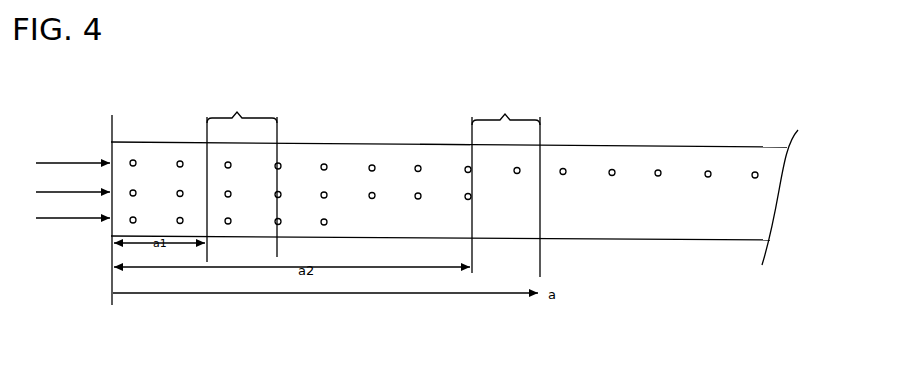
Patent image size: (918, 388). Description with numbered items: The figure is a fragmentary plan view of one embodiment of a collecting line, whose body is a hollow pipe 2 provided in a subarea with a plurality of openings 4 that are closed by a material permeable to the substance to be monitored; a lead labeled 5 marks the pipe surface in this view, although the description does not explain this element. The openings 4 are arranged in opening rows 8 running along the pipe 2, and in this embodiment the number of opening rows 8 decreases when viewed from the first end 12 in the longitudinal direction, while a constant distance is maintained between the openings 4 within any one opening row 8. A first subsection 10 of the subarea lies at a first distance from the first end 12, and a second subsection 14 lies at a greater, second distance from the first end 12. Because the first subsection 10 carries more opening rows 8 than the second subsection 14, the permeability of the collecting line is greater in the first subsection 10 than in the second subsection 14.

The hollow pipe 2 is at (715, 137).
The openings 4 is at (417, 164).
The upper edge 5 is at (443, 136).
The opening rows 8 is at (67, 190).
The first subsection 10 is at (242, 176).
The first end 12 is at (112, 162).
The second subsection 14 is at (506, 185).